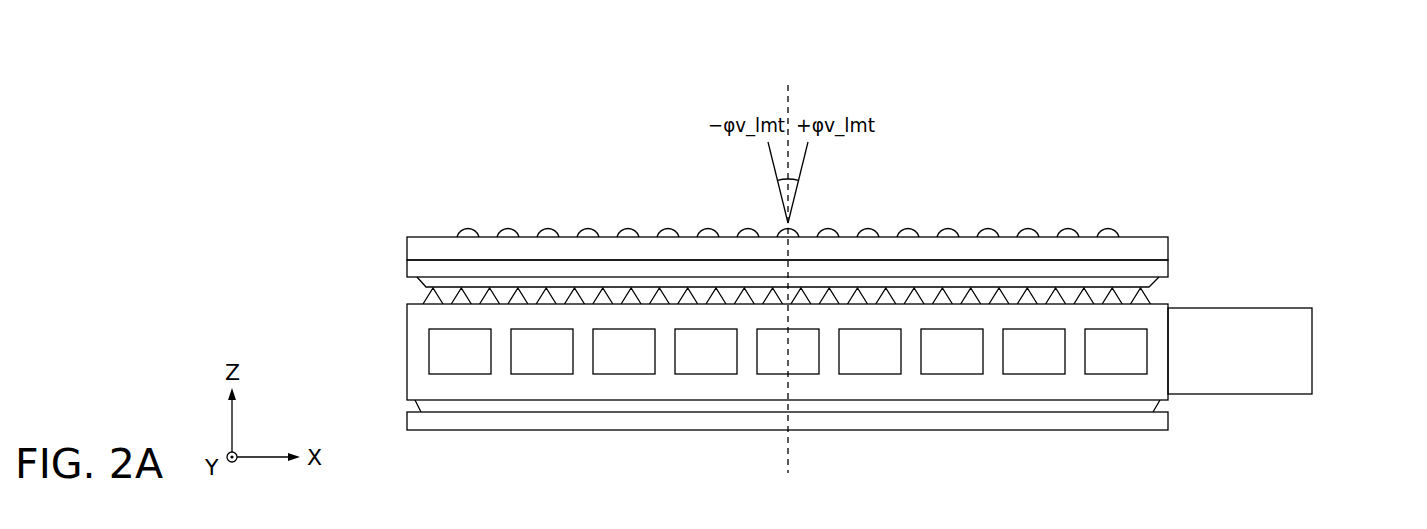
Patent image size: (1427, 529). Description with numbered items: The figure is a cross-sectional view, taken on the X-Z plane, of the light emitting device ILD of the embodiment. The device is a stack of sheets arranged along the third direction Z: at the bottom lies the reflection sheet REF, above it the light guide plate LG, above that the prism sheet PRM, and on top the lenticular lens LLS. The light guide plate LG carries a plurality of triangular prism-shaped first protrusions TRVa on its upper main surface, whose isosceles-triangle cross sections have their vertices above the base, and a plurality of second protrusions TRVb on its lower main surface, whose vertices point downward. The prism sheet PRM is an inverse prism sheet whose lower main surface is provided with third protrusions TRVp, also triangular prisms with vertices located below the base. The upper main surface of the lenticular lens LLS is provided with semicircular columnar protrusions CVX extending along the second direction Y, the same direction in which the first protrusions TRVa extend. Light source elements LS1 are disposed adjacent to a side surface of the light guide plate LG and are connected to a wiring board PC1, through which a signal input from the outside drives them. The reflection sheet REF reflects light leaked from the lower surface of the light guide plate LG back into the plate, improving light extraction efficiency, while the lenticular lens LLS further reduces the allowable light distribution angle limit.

The light emitting device ILD is at (1000, 155).
The semicircular columnar protrusions CVX is at (1107, 222).
The lenticular lens LLS is at (1170, 245).
The prism sheet PRM is at (406, 270).
The third protrusions TRVp is at (420, 284).
The first protrusions TRVa is at (1150, 291).
The light guide plate LG is at (406, 355).
The first light source elements LS1 is at (955, 363).
The second protrusions TRVb is at (1156, 406).
The reflection sheet REF is at (1090, 431).
The wiring board PC1 is at (1313, 350).